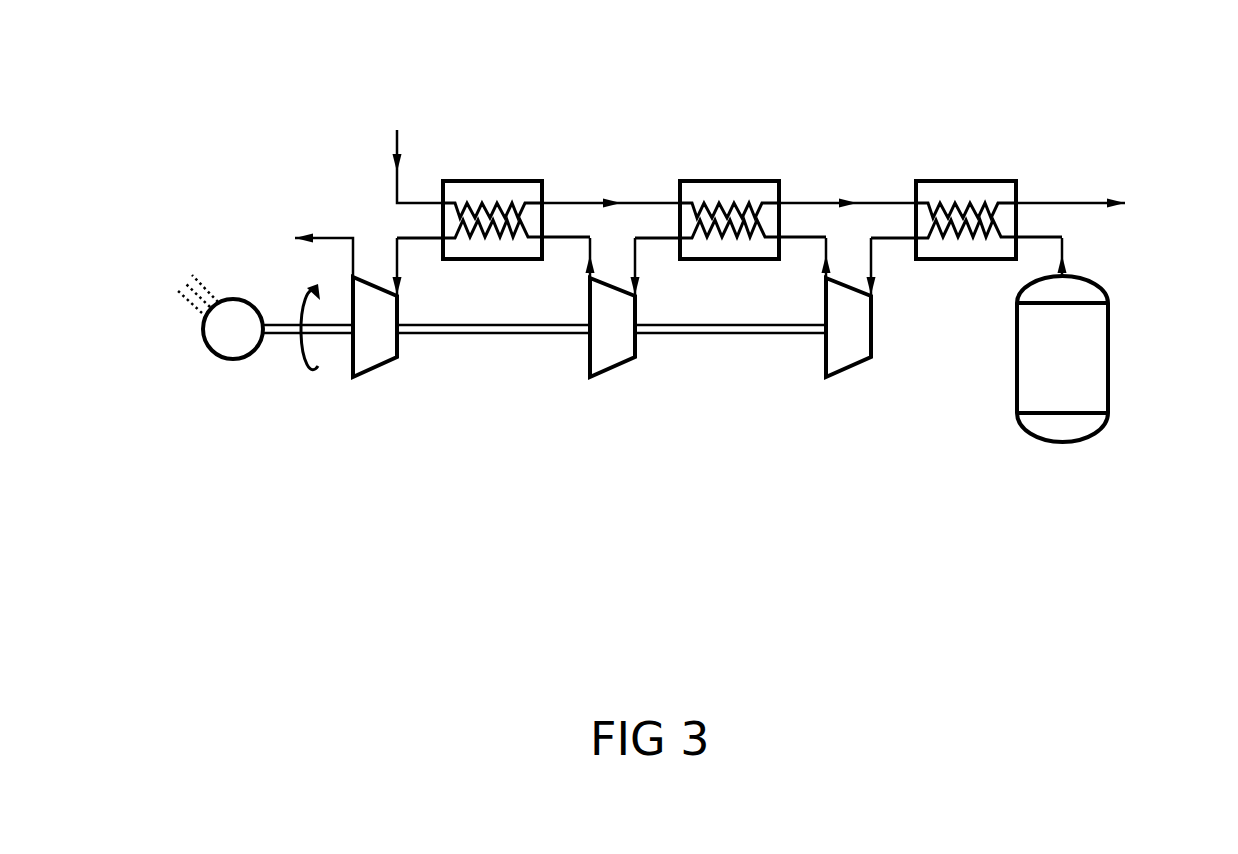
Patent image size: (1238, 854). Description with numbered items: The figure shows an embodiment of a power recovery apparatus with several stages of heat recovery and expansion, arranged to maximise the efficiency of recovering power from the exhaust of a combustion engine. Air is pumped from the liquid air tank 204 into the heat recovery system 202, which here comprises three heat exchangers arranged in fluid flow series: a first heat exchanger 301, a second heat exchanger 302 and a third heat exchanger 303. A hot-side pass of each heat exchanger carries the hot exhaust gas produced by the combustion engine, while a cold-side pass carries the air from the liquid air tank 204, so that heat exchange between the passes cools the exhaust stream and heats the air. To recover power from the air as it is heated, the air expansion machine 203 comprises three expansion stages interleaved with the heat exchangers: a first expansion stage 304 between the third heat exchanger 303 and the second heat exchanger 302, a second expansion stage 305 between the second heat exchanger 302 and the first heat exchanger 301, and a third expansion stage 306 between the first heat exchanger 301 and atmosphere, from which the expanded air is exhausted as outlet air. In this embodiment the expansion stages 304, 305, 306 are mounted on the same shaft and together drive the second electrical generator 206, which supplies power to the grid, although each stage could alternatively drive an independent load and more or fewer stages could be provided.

The heat recovery system 202 is at (896, 86).
The air expansion machine 203 is at (512, 465).
The liquid air tank 204 is at (1108, 397).
The second electrical generator 206 is at (203, 337).
The first heat exchanger 301 is at (527, 181).
The second heat exchanger 302 is at (763, 181).
The third heat exchanger 303 is at (1000, 181).
The first expansion stage 304 is at (873, 350).
The second expansion stage 305 is at (637, 350).
The third expansion stage 306 is at (400, 350).